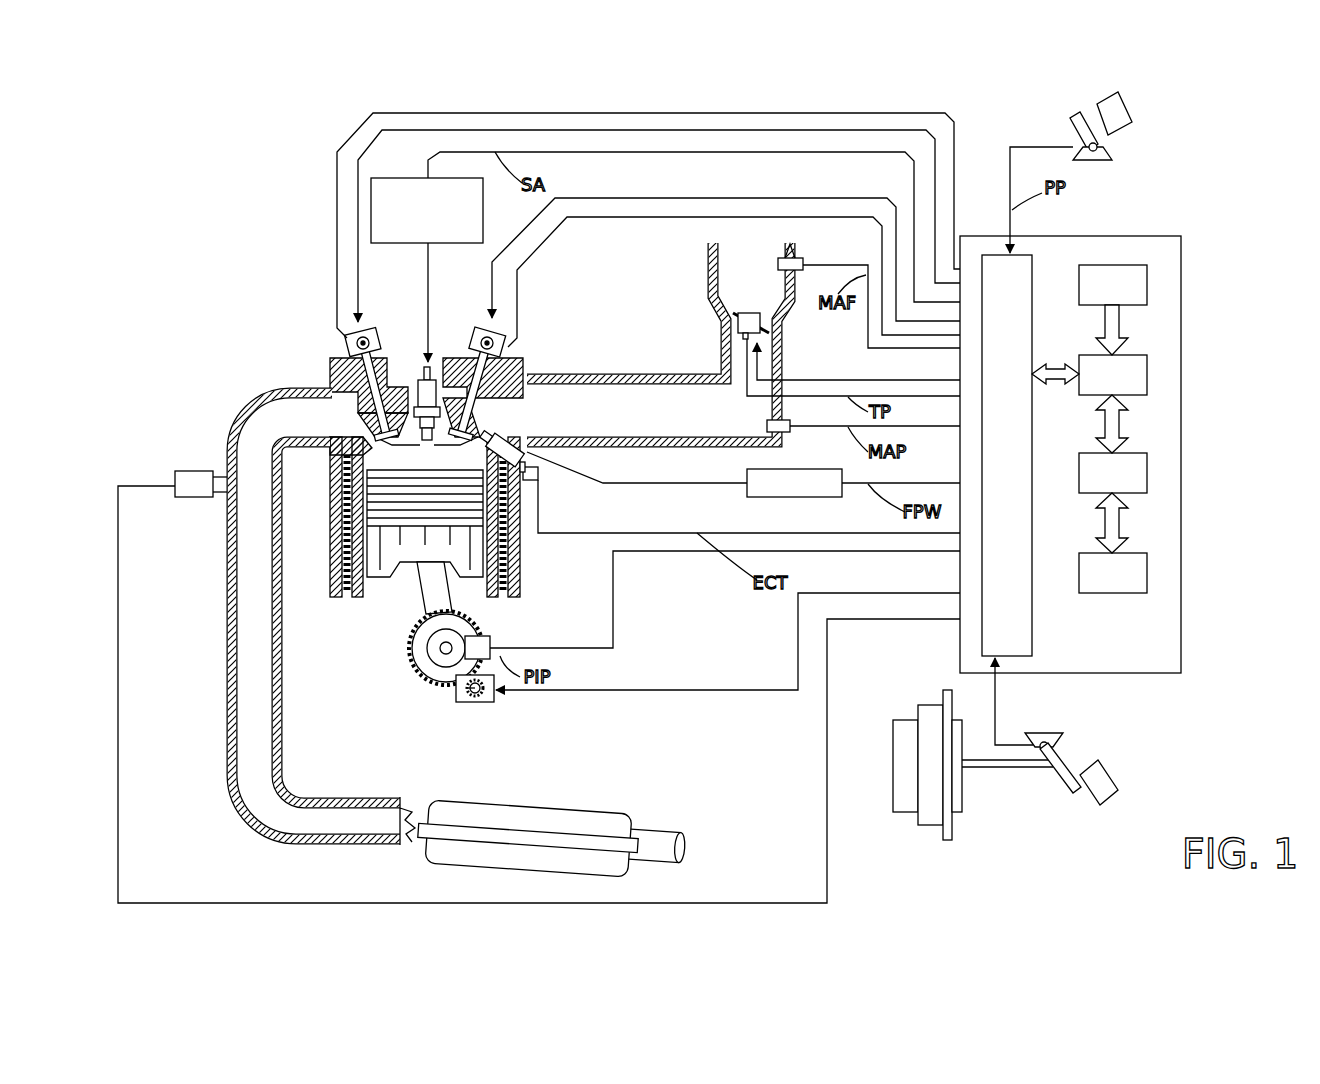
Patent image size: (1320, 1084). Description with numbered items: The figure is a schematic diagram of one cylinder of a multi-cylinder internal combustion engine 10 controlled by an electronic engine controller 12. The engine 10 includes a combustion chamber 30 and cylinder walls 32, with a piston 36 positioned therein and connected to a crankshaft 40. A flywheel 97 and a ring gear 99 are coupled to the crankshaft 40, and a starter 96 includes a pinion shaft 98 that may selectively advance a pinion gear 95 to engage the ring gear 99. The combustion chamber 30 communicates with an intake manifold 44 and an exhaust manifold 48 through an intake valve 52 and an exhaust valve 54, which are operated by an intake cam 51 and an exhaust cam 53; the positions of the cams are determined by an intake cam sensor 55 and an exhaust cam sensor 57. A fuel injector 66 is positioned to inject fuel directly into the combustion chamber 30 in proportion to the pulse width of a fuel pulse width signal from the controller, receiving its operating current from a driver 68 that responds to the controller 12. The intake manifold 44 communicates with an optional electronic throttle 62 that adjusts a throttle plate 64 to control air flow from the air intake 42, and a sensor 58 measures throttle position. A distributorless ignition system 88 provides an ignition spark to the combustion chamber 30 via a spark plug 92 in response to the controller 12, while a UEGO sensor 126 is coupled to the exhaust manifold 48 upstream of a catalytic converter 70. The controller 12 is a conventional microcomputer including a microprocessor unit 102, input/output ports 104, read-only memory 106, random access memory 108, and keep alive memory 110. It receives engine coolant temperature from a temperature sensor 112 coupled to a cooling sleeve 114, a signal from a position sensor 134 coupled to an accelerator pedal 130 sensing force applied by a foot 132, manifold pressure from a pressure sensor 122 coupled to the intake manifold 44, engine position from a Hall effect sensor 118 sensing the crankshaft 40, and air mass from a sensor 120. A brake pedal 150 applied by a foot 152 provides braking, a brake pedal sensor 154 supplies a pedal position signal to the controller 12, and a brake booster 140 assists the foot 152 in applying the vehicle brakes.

The internal combustion engine 10 is at (268, 318).
The electronic engine controller 12 is at (1112, 438).
The combustion chamber 30 is at (418, 453).
The cylinder walls 32 is at (365, 598).
The piston 36 is at (405, 547).
The crankshaft 40 is at (435, 662).
The air intake 42 is at (737, 288).
The intake manifold 44 is at (676, 422).
The exhaust manifold 48 is at (285, 425).
The intake cam 51 is at (480, 330).
The intake valve 52 is at (470, 428).
The exhaust cam 53 is at (365, 330).
The exhaust valve 54 is at (360, 432).
The intake cam sensor 55 is at (500, 339).
The exhaust cam sensor 57 is at (345, 340).
The throttle position sensor 58 is at (740, 340).
The electronic throttle 62 is at (765, 318).
The throttle plate 64 is at (738, 318).
The fuel injector 66 is at (530, 456).
The driver 68 is at (760, 497).
The catalytic converter 70 is at (445, 800).
The distributorless ignition system 88 is at (375, 178).
The spark plug 92 is at (430, 365).
The pinion gear 95 is at (474, 703).
The starter 96 is at (496, 700).
The flywheel 97 is at (420, 642).
The pinion shaft 98 is at (462, 702).
The ring gear 99 is at (440, 682).
The microprocessor unit 102 is at (1147, 375).
The input/output ports 104 is at (1035, 270).
The read-only memory 106 is at (1147, 287).
The random access memory 108 is at (1147, 473).
The keep alive memory 110 is at (1147, 573).
The temperature sensor 112 is at (534, 481).
The cooling sleeve 114 is at (503, 556).
The Hall effect sensor 118 is at (497, 637).
The air mass sensor 120 is at (795, 258).
The pressure sensor 122 is at (785, 432).
The Universal Exhaust Gas Oxygen sensor 126 is at (175, 478).
The accelerator pedal 130 is at (1075, 125).
The foot 132 is at (1130, 112).
The position sensor 134 is at (1110, 150).
The brake booster 140 is at (893, 812).
The brake pedal 150 is at (1070, 790).
The foot 152 is at (1105, 762).
The brake pedal sensor 154 is at (1035, 745).